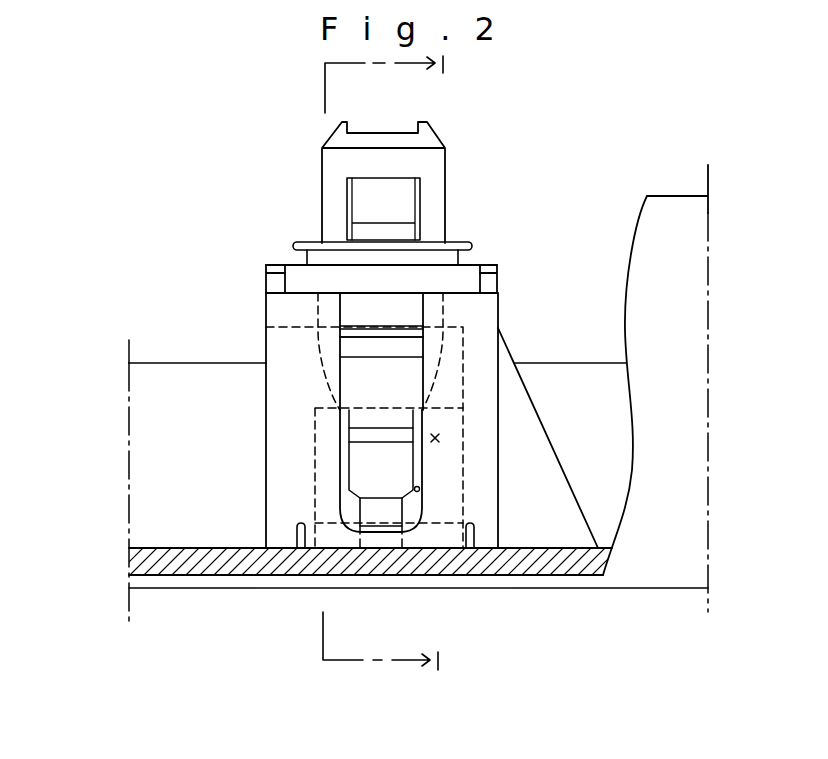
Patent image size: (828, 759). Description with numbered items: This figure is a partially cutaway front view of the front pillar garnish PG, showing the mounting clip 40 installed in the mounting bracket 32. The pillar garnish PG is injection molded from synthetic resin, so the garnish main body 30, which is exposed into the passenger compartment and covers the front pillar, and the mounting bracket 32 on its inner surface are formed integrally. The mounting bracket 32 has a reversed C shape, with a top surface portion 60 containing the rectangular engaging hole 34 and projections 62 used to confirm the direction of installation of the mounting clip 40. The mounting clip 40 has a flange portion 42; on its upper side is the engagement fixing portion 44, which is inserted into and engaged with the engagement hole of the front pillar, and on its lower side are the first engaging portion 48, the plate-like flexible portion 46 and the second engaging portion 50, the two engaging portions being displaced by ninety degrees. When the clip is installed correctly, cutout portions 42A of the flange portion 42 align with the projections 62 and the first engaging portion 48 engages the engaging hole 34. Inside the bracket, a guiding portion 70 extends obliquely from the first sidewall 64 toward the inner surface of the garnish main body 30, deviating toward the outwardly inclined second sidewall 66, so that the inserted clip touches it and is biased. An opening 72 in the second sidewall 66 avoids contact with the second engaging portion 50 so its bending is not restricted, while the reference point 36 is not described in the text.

The garnish main body 30 is at (678, 190).
The mounting bracket 32 is at (256, 405).
The engaging hole 34 is at (317, 313).
The contact point 36 is at (439, 438).
The mounting clip 40 is at (382, 190).
The flange portion 42 is at (468, 275).
The cutout portions 42A is at (282, 264).
The engagement fixing portion 44 is at (437, 173).
The flexible portion 46 is at (367, 463).
The first engaging portion 48 is at (365, 337).
The second engaging portion 50 is at (377, 515).
The top surface portion 60 is at (300, 292).
The projections 62 is at (273, 287).
The first sidewall 64 is at (452, 372).
The second sidewall 66 is at (445, 458).
The guiding portion 70 is at (315, 452).
The opening 72 is at (419, 490).
The pillar garnish PG is at (289, 598).